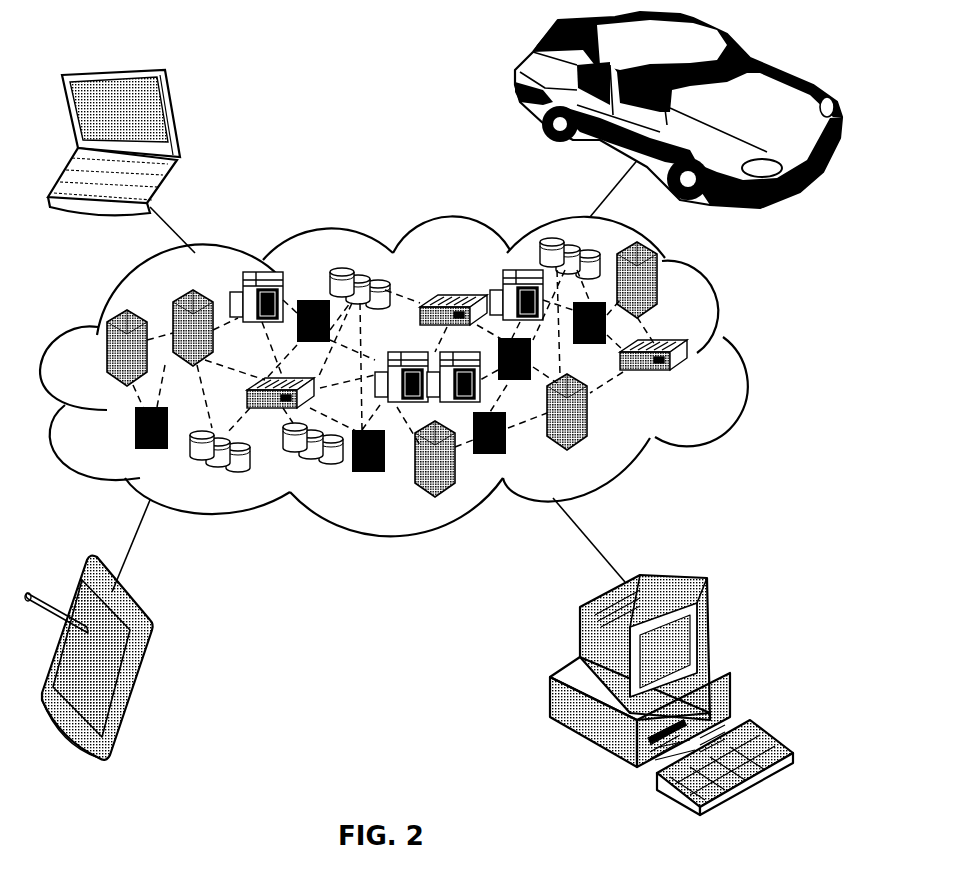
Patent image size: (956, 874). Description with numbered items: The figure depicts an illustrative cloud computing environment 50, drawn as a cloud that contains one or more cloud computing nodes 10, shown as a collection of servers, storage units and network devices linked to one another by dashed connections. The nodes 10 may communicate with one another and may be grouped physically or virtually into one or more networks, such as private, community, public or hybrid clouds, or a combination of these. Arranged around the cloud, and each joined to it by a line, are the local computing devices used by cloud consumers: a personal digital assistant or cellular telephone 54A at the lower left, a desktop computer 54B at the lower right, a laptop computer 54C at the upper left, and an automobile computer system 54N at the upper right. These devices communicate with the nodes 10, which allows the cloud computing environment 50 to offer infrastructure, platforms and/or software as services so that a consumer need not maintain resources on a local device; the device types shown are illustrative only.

The cloud computing nodes 10 is at (700, 385).
The cloud computing environment 50 is at (740, 356).
The personal digital assistant or cellular telephone 54A is at (147, 652).
The desktop computer 54B is at (680, 572).
The laptop computer 54C is at (178, 114).
The automobile computer system 54N is at (520, 88).